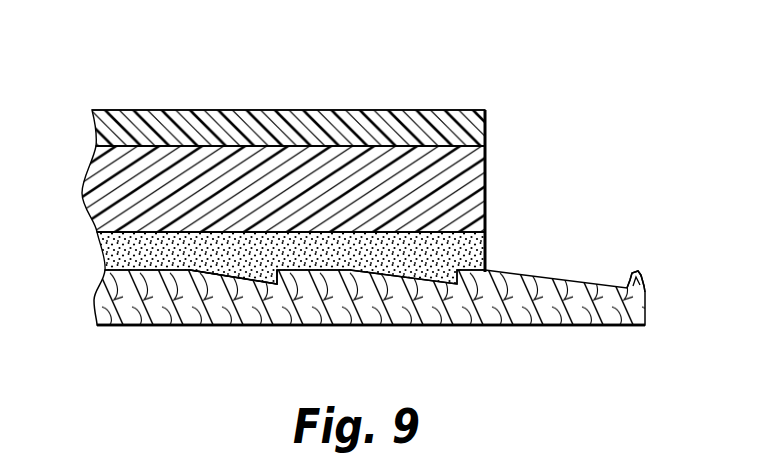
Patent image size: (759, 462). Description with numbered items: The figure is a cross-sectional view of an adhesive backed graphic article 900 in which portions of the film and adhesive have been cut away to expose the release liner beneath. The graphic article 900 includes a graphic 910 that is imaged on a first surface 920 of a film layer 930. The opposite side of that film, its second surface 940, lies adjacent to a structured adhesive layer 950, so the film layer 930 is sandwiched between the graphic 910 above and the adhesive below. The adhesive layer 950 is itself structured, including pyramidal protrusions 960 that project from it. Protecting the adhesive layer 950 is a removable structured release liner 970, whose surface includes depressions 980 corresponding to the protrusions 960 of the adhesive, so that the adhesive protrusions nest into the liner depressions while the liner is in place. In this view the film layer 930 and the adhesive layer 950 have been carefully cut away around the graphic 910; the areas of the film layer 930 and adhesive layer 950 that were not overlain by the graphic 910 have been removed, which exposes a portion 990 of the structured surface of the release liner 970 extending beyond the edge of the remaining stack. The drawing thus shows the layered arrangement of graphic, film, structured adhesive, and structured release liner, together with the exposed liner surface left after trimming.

The graphic article 900 is at (126, 64).
The graphic 910 is at (476, 134).
The first surface 920 is at (322, 146).
The film layer 930 is at (470, 181).
The second surface 940 is at (477, 229).
The structured adhesive layer 950 is at (475, 249).
The pyramidal protrusions 960 is at (437, 280).
The removable structured release liner 970 is at (632, 308).
The depressions 980 is at (255, 285).
The portion of the structured surface of the release liner 990 is at (553, 362).